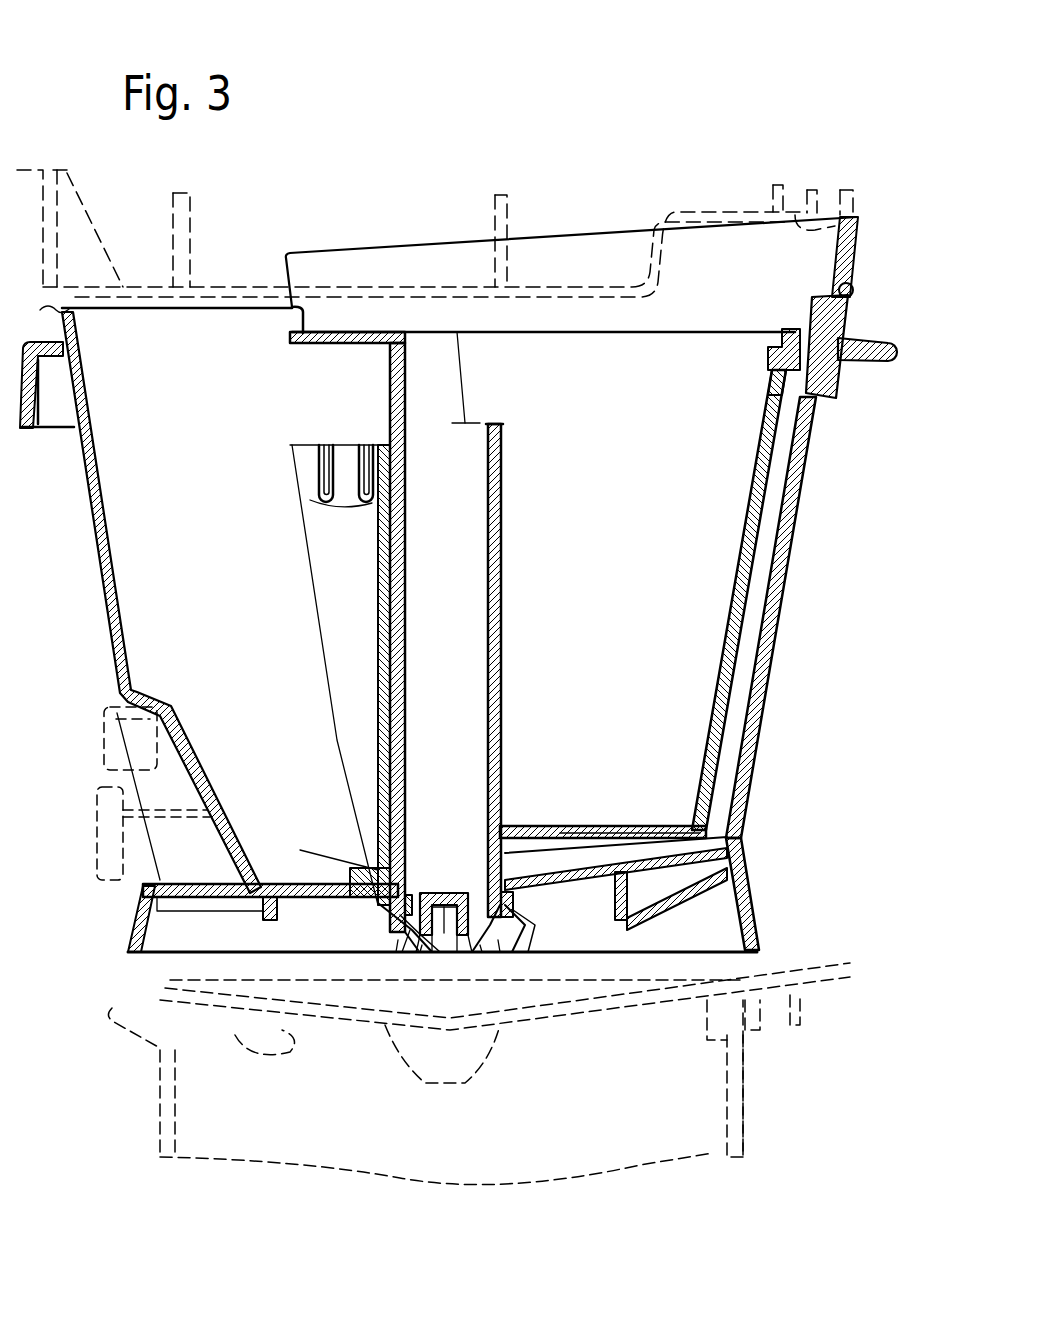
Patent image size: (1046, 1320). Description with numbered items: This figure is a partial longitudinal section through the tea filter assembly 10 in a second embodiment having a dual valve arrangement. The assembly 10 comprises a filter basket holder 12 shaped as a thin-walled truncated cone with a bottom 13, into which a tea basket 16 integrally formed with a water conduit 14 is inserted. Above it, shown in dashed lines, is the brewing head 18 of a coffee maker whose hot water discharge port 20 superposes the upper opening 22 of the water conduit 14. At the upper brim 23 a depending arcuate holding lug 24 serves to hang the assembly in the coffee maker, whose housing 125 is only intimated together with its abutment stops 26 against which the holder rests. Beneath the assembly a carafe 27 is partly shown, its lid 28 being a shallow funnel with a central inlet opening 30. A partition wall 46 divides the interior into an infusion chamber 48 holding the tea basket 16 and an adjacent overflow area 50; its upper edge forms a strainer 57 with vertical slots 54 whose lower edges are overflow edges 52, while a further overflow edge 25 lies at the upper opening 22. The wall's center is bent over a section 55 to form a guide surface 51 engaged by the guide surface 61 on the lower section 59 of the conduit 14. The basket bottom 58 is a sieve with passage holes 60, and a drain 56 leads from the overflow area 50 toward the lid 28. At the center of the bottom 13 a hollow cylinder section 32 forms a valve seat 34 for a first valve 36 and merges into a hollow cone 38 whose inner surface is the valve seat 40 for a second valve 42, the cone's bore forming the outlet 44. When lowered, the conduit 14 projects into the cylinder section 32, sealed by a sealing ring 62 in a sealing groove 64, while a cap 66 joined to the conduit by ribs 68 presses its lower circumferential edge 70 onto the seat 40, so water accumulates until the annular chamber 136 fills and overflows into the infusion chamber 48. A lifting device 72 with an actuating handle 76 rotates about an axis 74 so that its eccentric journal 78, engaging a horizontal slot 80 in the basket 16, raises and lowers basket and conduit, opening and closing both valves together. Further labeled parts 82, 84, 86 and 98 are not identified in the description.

The tea filter assembly 10 is at (104, 664).
The filter basket holder 12 is at (790, 604).
The bottom 13 is at (660, 895).
The water conduit 14 is at (501, 505).
The tea basket 16 is at (740, 700).
The brewing head 18 is at (85, 225).
The hot water discharge port 20 is at (437, 285).
The upper opening 22 is at (470, 420).
The upper brim 23 is at (43, 301).
The holding lug 24 is at (32, 432).
The overflow edge 25 is at (505, 424).
The abutment stops 26 is at (104, 768).
The carafe 27 is at (745, 1116).
The lid 28 is at (620, 1010).
The inlet opening 30 is at (440, 1090).
The hollow cylinder section 32 is at (535, 945).
The valve seat 34 is at (520, 925).
The valve 36 is at (380, 915).
The hollow cone 38 is at (540, 945).
The valve seat 40 is at (505, 952).
The valve 42 is at (388, 947).
The outlet 44 is at (430, 952).
The partition wall 46 is at (378, 571).
The infusion chamber 48 is at (725, 775).
The overflow area 50 is at (183, 601).
The guide surface 51 is at (400, 558).
The overflow edges 52 is at (372, 503).
The slots 54 is at (366, 445).
The section 55 is at (378, 642).
The drain 56 is at (365, 880).
The strainer 57 is at (300, 468).
The bottom 58 is at (635, 826).
The lower section 59 is at (402, 905).
The passage holes 60 is at (575, 826).
The guide surface 61 is at (388, 900).
The sealing ring 62 is at (392, 905).
The sealing groove 64 is at (505, 900).
The cap 66 is at (442, 893).
The ribs 68 is at (372, 952).
The lower circumferential edge 70 is at (458, 952).
The lifting device 72 is at (855, 300).
The axis of rotation 74 is at (853, 347).
The actuating handle 76 is at (873, 360).
The eccentric journal 78 is at (768, 350).
The slot 80 is at (772, 385).
The ledge 82 is at (540, 900).
The outlet wall 84 is at (408, 952).
The outlet 86 is at (406, 941).
The seal 98 is at (510, 880).
The housing 125 is at (100, 858).
The annular chamber 136 is at (454, 687).